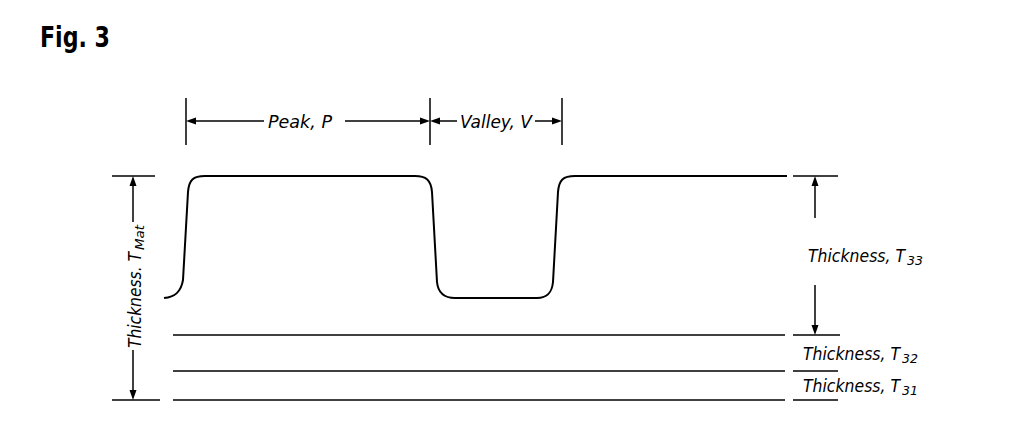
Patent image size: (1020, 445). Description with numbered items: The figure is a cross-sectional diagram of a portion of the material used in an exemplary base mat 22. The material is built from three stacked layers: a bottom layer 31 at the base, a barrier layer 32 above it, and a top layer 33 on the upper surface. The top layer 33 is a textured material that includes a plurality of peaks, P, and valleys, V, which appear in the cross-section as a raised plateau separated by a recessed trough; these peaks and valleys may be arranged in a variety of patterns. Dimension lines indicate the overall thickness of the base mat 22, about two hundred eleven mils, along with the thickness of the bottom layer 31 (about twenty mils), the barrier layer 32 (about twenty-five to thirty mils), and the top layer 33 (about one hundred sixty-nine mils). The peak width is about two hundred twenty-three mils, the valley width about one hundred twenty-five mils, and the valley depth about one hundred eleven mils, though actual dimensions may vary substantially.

The base mat 22 is at (401, 290).
The top layer 33 is at (479, 321).
The barrier layer 32 is at (479, 356).
The bottom layer 31 is at (479, 386).